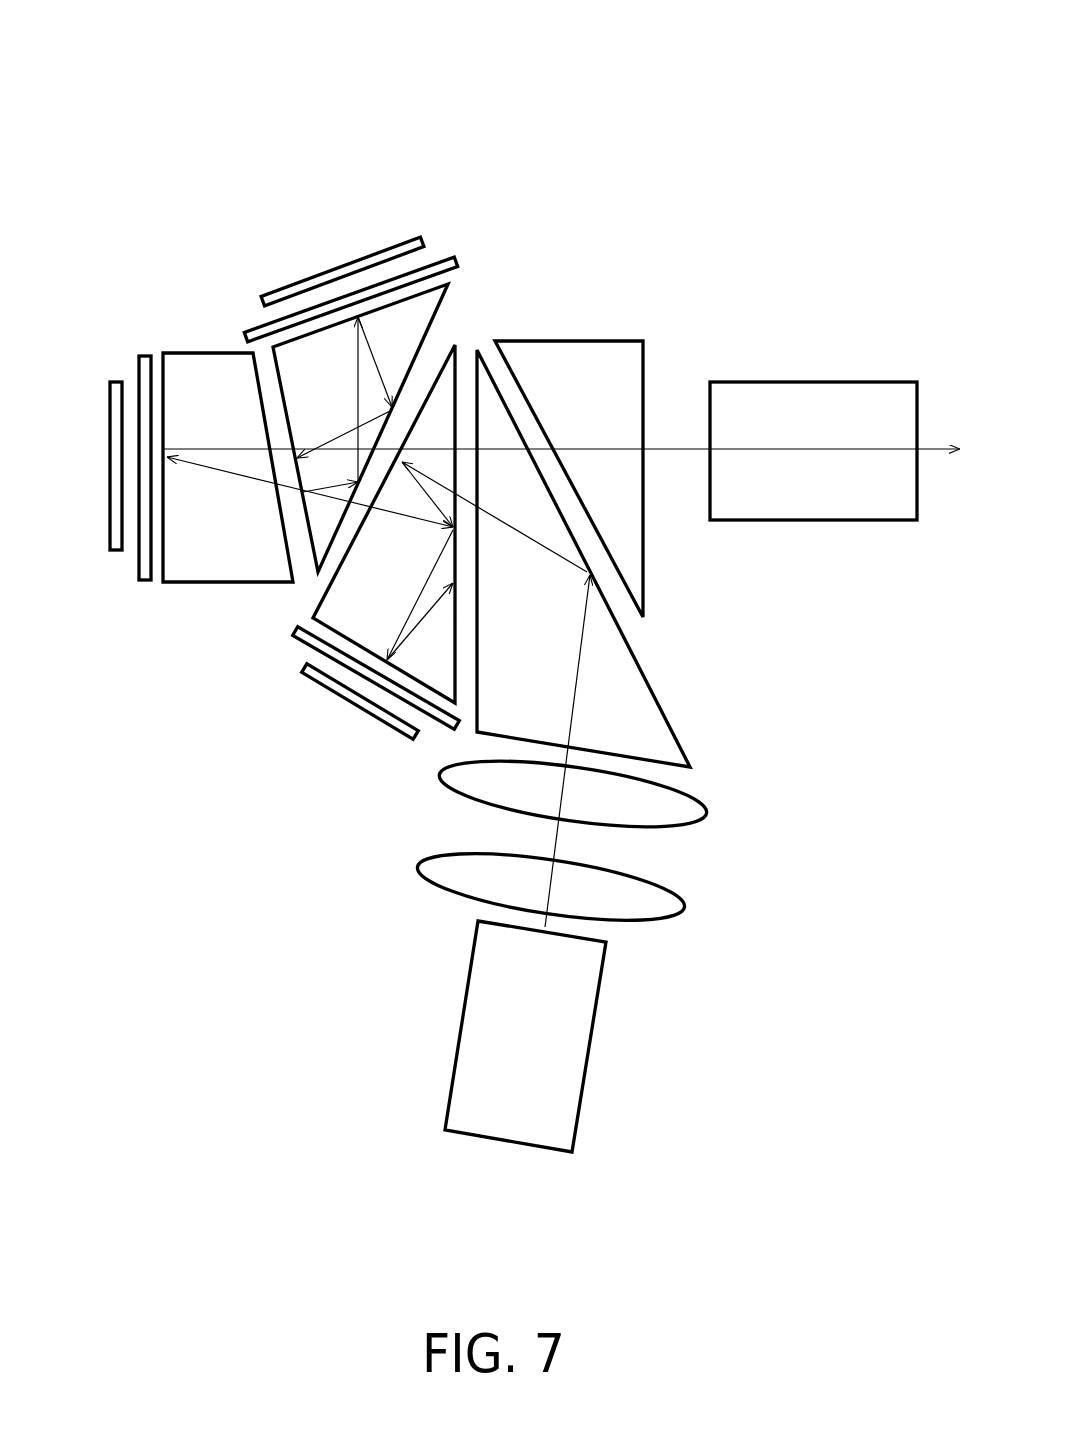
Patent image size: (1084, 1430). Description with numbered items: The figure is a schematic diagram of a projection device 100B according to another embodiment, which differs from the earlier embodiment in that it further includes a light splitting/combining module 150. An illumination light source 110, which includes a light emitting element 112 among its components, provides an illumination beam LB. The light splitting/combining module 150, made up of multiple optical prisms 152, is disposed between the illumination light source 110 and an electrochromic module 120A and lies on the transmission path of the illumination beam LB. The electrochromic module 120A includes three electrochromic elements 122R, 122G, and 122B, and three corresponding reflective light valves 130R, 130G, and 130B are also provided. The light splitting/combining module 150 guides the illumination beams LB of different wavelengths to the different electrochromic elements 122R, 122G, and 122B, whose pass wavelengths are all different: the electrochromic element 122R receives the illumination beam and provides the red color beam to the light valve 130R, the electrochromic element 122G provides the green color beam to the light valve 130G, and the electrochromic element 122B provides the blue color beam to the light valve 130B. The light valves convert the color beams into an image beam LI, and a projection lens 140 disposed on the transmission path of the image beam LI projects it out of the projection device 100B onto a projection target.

The projection device 100B is at (903, 1279).
The illumination light source 110 is at (757, 913).
The light emitting element 112 is at (577, 1062).
The electrochromic module 120A is at (173, 5).
The electrochromic element 122R is at (245, 330).
The electrochromic element 122G is at (143, 355).
The electrochromic element 122B is at (308, 643).
The light valve 130R is at (397, 250).
The light valve 130G is at (113, 380).
The light valve 130B is at (345, 695).
The projection lens 140 is at (818, 392).
The light splitting/combining module 150 is at (620, 310).
The optical prism 152 is at (533, 345).
The image beam LI is at (670, 449).
The illumination beam LB is at (558, 845).